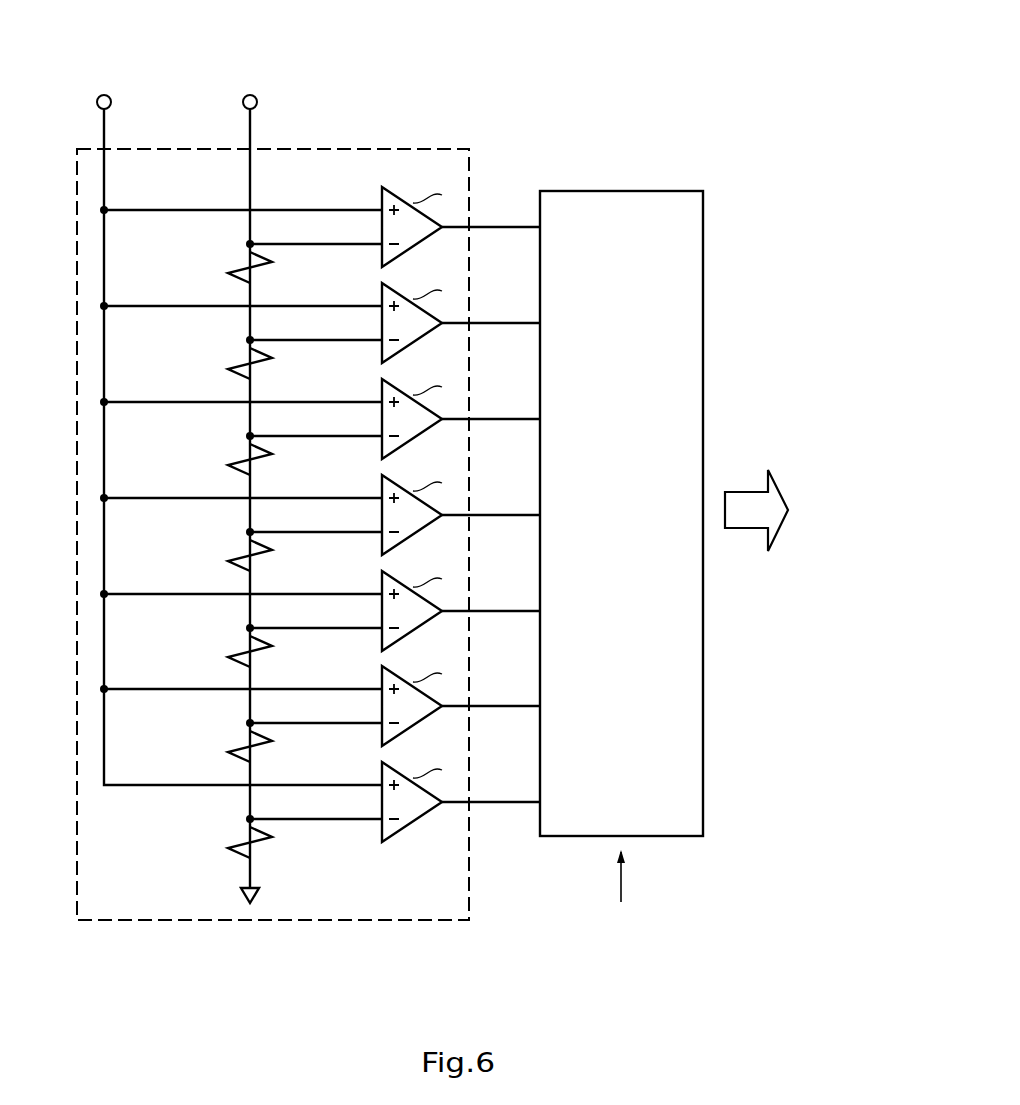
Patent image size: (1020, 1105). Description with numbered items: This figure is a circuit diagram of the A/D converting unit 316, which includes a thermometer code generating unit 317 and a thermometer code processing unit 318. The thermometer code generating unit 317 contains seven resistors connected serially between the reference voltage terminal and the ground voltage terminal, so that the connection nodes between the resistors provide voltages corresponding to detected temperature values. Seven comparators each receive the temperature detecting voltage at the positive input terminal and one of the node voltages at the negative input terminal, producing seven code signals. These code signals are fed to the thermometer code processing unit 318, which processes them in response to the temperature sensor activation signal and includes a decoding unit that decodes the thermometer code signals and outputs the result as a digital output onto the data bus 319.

The A/D converting unit 316 is at (512, 82).
The thermometer code generating unit 317 is at (384, 148).
The thermometer code processing unit 318 is at (620, 190).
The data bus 319 is at (848, 500).